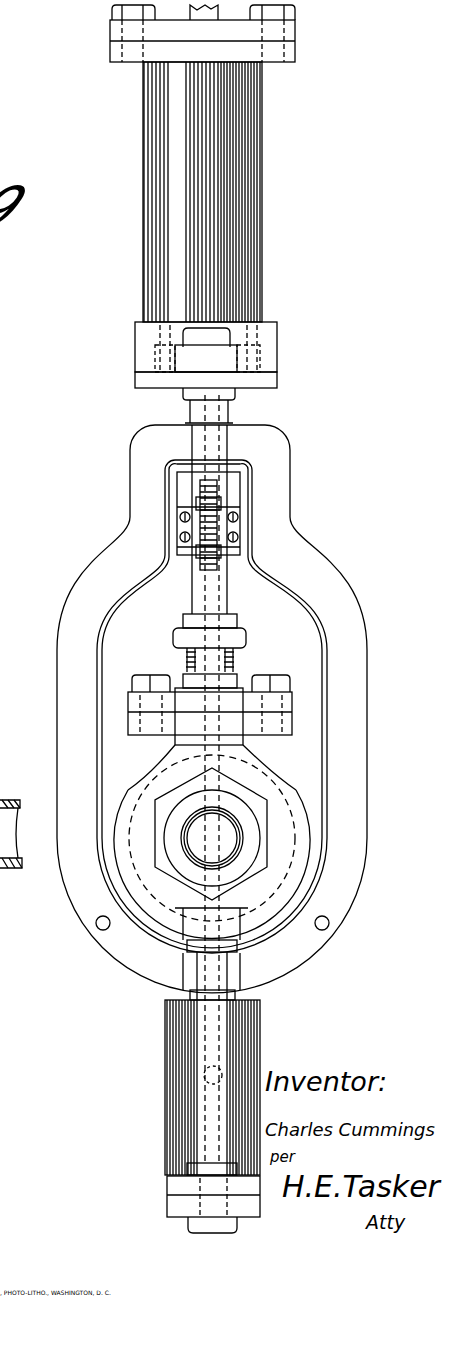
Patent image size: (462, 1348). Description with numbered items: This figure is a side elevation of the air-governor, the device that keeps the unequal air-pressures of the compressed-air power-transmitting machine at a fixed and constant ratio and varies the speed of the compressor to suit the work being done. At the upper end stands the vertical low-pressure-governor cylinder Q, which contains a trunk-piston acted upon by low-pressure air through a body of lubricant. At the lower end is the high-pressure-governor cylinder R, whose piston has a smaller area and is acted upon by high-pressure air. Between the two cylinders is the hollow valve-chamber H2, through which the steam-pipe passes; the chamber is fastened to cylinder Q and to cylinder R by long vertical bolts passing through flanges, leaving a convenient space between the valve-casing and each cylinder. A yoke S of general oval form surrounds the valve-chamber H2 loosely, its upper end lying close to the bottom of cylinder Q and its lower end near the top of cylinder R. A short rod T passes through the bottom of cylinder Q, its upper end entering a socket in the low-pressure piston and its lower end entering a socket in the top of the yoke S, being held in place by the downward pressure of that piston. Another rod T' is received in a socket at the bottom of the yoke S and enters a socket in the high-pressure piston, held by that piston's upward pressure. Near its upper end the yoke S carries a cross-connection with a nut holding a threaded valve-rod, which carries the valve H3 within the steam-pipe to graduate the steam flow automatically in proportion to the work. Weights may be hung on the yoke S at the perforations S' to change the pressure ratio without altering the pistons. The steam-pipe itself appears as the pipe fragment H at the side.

The valve H3 is at (202, 33).
The low-pressure-governor cylinder Q is at (253, 207).
The short bar or rod T is at (186, 352).
The rod or bar T' is at (181, 780).
The yoke S is at (212, 712).
The perforations S' is at (219, 793).
The valve-chamber H2 is at (190, 790).
The high-pressure-governor cylinder R is at (178, 1024).
The pipe section H is at (11, 819).